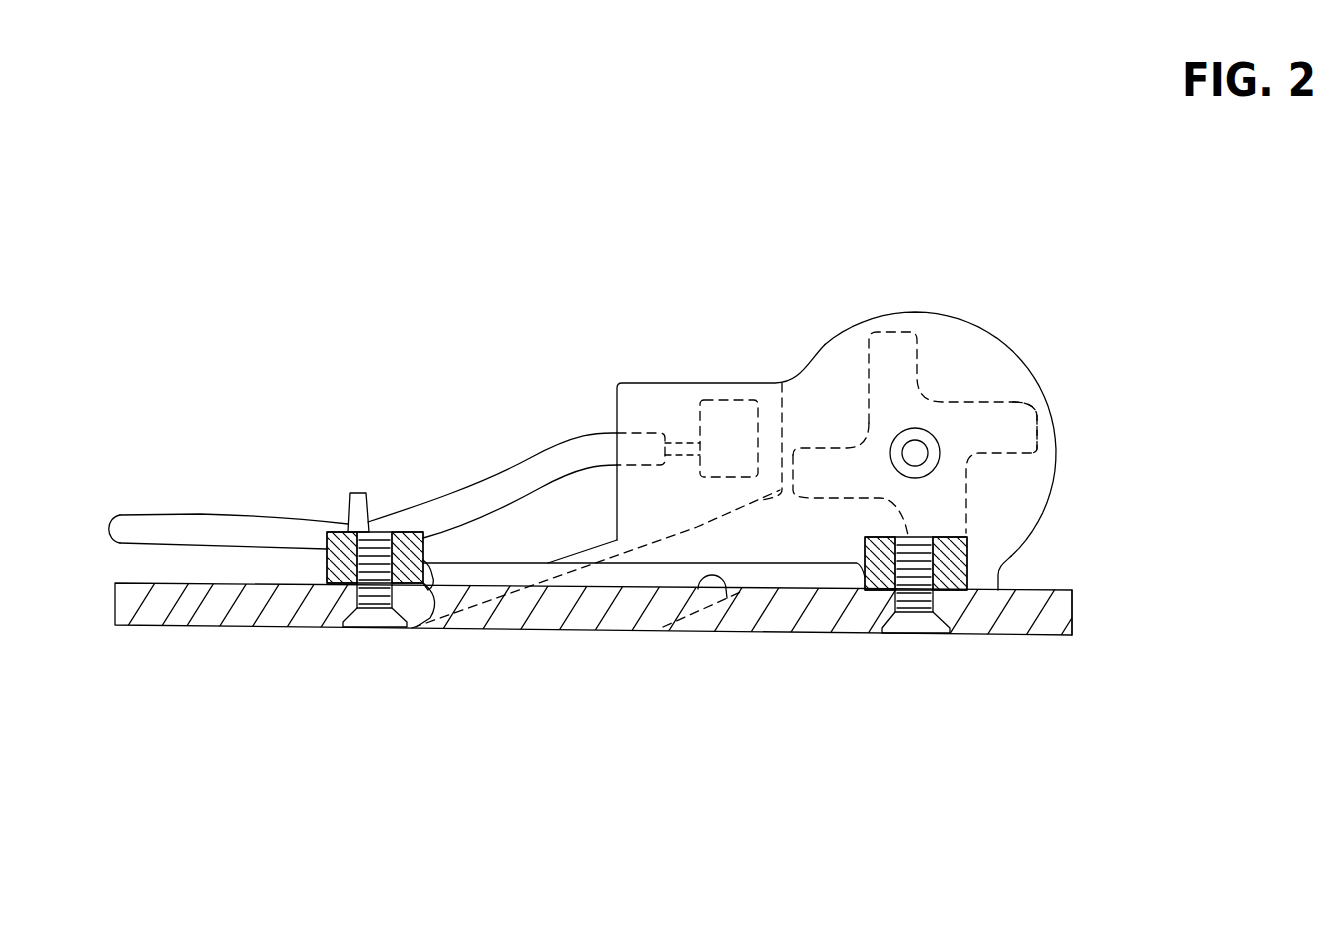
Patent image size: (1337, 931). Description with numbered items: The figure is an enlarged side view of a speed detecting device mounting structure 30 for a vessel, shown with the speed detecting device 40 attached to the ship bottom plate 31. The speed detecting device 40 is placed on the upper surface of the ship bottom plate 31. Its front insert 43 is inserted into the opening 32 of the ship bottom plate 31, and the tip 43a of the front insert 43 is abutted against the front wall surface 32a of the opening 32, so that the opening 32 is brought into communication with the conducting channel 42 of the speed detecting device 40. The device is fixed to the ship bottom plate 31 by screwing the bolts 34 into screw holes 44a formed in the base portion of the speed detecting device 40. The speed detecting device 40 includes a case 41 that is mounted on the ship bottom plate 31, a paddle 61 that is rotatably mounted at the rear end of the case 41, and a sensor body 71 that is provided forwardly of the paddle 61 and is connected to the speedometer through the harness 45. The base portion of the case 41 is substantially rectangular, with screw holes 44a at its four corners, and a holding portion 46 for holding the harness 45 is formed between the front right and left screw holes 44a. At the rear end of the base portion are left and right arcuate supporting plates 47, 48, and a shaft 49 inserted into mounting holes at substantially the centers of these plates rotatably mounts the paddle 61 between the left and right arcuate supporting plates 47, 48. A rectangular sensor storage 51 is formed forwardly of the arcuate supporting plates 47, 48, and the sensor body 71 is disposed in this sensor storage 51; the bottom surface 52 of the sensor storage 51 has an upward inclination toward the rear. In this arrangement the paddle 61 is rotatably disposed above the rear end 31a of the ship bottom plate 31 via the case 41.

The speed detecting device mounting structure 30 is at (988, 218).
The ship bottom plate 31 is at (190, 628).
The rear end of the ship bottom plate 31a is at (1052, 623).
The opening 32 is at (691, 598).
The front wall surface of the opening 32a is at (420, 630).
The bolts 34 is at (358, 628).
The speed detecting device 40 is at (675, 383).
The case 41 is at (822, 370).
The conducting channel 42 is at (640, 550).
The front insert 43 is at (483, 590).
The tip of the front insert 43a is at (383, 630).
The screw holes 44a is at (390, 522).
The harness 45 is at (235, 528).
The holding portion 46 is at (354, 505).
The left arcuate supporting plate 47 is at (1044, 428).
The right arcuate supporting plate 48 is at (1025, 427).
The shaft 49 is at (915, 453).
The sensor storage 51 is at (636, 398).
The bottom surface of the sensor storage 52 is at (728, 513).
The paddle 61 is at (990, 407).
The sensor body 71 is at (736, 400).